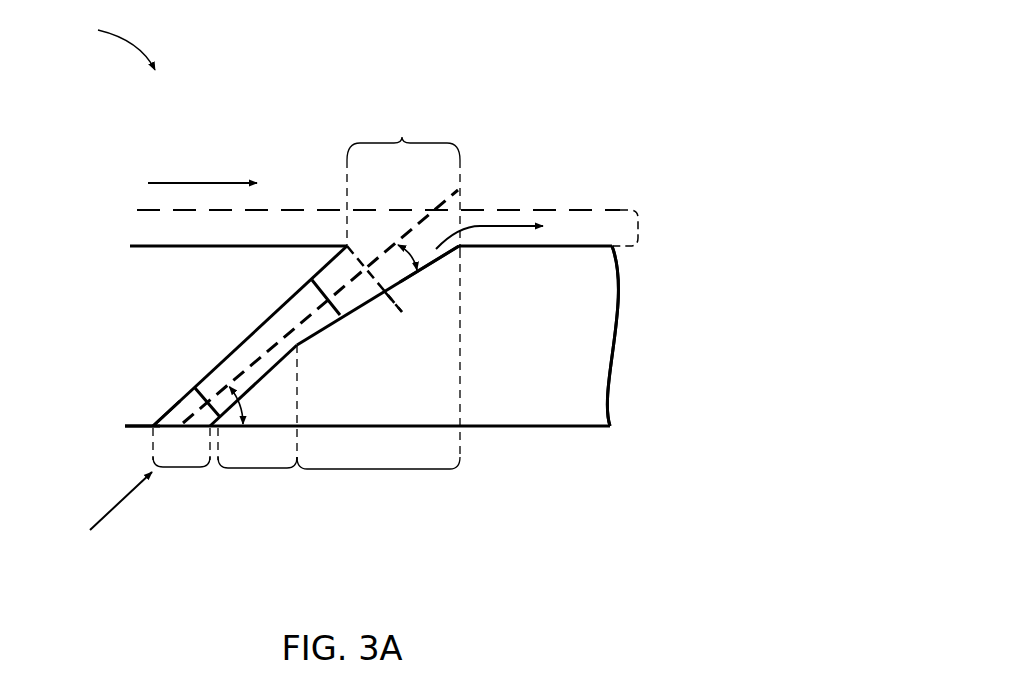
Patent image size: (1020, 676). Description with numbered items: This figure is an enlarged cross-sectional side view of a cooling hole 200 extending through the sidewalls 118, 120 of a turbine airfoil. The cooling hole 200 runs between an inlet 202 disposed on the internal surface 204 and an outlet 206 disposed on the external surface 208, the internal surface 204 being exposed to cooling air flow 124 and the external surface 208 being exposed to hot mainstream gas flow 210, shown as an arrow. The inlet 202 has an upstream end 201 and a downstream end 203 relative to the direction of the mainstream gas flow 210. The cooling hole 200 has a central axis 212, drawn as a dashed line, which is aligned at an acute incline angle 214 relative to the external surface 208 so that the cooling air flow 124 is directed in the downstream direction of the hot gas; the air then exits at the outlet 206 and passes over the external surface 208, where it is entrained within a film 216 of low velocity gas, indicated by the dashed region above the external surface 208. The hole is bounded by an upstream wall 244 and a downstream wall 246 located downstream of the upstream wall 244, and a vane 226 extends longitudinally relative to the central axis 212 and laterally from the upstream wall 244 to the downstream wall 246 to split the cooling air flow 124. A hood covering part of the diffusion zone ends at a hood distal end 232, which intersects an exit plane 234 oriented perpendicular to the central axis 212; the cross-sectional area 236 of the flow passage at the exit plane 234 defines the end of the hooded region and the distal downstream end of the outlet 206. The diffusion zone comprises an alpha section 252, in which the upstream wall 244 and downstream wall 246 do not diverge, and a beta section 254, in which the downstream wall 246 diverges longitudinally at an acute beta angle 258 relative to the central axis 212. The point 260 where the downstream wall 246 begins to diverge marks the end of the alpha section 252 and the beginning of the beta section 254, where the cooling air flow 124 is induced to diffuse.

The cooling hole 200 is at (104, 43).
The upstream end 201 is at (153, 428).
The inlet 202 is at (183, 467).
The downstream end 203 is at (178, 407).
The internal surface 204 is at (516, 428).
The outlet 206 is at (402, 143).
The external surface 208 is at (130, 246).
The hot mainstream gas flow 210 is at (197, 183).
The central axis 212 is at (440, 205).
The incline angle 214 is at (240, 404).
The film 216 is at (645, 228).
The vane 226 is at (313, 333).
The hood distal end 232 is at (346, 245).
The exit plane 234 is at (400, 305).
The cross-sectional area at the exit plane 236 is at (366, 306).
The upstream wall 244 is at (238, 340).
The downstream wall 246 is at (418, 272).
The alpha section 252 is at (258, 468).
The beta section 254 is at (378, 469).
The beta angle 258 is at (413, 248).
The point where the downstream wall begins to diverge 260 is at (295, 337).
The cooling air flow 124 is at (115, 508).
The sidewall 118 is at (623, 333).
The sidewall 120 is at (612, 336).